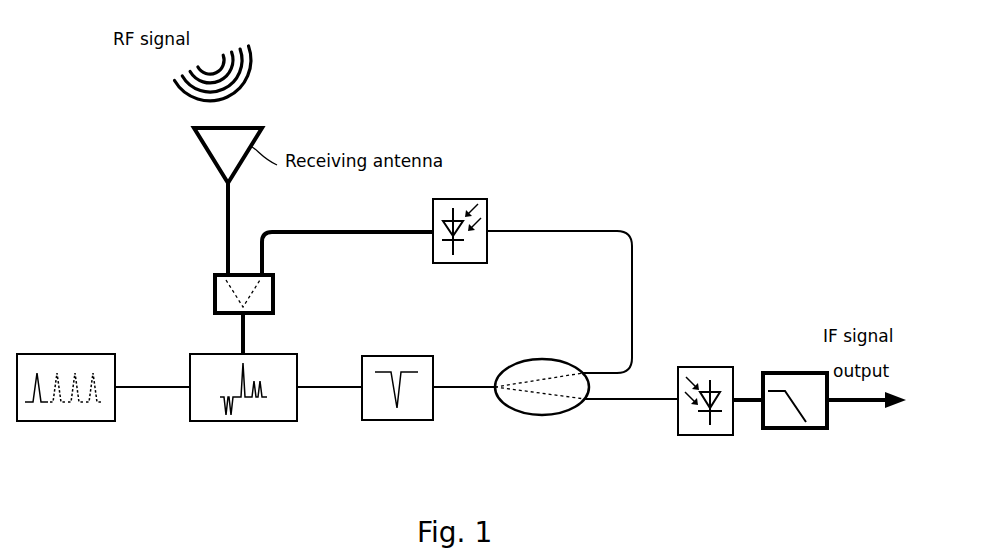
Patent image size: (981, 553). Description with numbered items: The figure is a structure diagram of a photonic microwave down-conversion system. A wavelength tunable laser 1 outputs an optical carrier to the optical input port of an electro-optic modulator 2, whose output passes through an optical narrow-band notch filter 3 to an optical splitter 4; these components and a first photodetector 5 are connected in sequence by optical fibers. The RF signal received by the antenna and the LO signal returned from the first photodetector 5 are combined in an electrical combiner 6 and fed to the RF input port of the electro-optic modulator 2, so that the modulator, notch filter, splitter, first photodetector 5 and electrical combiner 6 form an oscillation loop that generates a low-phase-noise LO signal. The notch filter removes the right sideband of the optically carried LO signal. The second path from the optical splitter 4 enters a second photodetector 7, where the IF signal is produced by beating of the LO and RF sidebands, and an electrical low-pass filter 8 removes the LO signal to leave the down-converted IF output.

The wavelength tunable laser 1 is at (68, 421).
The electro-optic modulator 2 is at (248, 421).
The optical narrow-band notch filter 3 is at (410, 420).
The optical splitter 4 is at (547, 415).
The first photodetector 5 is at (462, 199).
The electrical combiner 6 is at (213, 303).
The second photodetector 7 is at (718, 435).
The electrical low-pass filter 8 is at (795, 428).